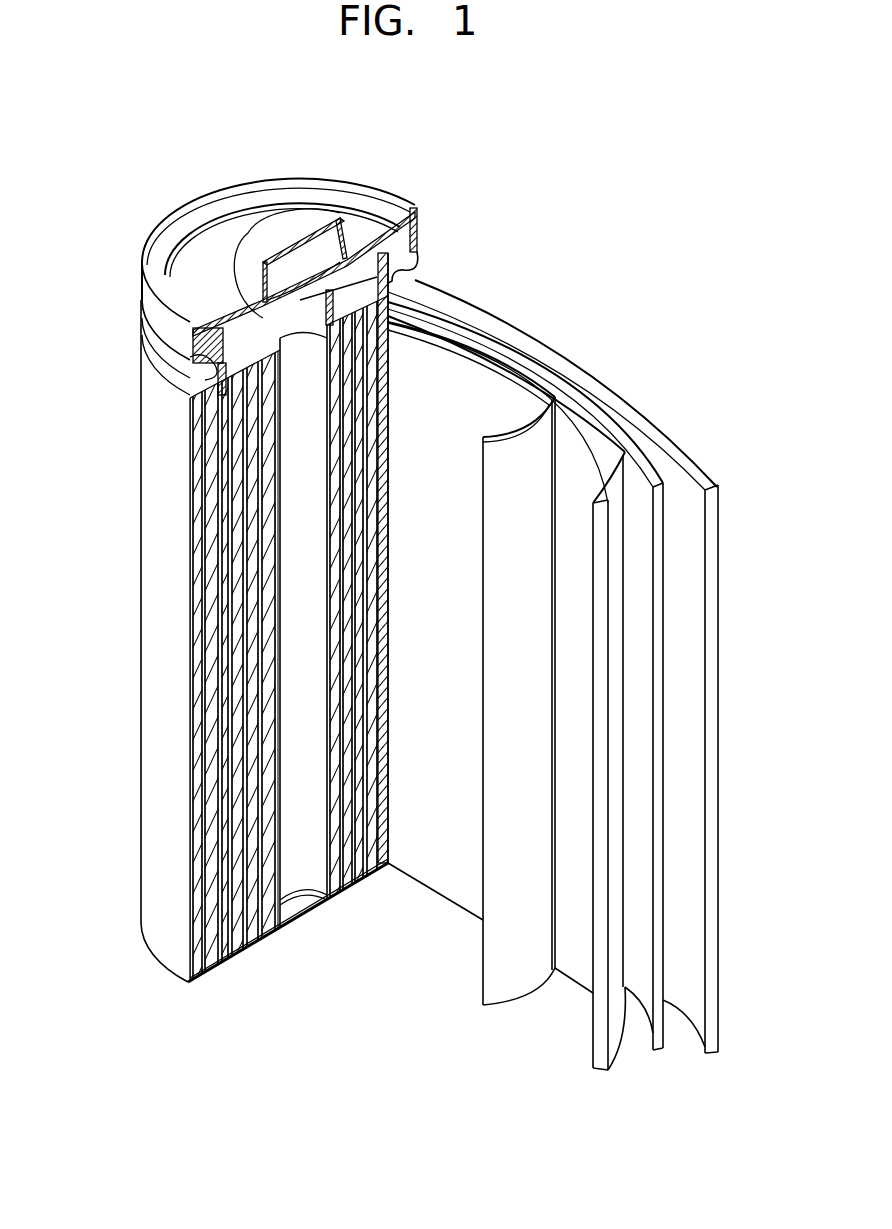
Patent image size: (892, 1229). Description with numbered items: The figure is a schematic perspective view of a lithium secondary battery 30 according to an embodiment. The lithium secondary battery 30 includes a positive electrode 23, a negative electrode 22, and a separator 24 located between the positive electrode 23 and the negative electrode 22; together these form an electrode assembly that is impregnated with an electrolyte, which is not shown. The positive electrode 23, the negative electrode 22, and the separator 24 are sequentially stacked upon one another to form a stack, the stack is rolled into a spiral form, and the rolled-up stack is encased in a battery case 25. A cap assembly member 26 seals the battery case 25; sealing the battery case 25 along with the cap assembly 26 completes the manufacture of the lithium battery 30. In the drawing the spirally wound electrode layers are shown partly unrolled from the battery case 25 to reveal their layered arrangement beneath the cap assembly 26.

The lithium secondary battery 30 is at (426, 127).
The cap assembly member 26 is at (273, 225).
The battery case 25 is at (152, 630).
The separator 24 is at (515, 367).
The positive electrode 23 is at (583, 413).
The negative electrode 22 is at (702, 462).